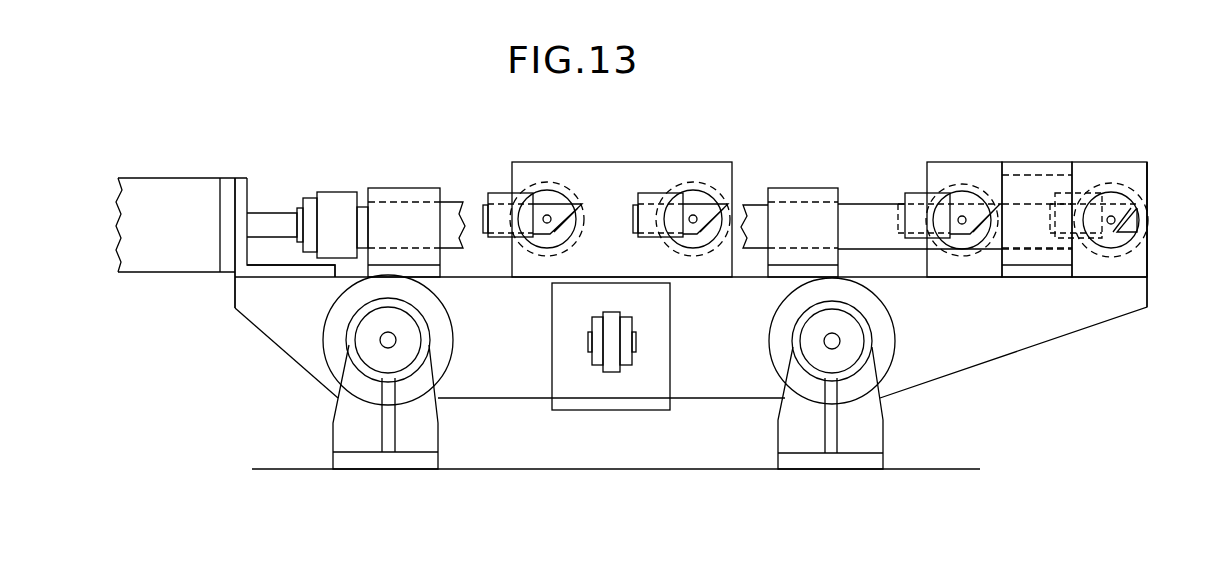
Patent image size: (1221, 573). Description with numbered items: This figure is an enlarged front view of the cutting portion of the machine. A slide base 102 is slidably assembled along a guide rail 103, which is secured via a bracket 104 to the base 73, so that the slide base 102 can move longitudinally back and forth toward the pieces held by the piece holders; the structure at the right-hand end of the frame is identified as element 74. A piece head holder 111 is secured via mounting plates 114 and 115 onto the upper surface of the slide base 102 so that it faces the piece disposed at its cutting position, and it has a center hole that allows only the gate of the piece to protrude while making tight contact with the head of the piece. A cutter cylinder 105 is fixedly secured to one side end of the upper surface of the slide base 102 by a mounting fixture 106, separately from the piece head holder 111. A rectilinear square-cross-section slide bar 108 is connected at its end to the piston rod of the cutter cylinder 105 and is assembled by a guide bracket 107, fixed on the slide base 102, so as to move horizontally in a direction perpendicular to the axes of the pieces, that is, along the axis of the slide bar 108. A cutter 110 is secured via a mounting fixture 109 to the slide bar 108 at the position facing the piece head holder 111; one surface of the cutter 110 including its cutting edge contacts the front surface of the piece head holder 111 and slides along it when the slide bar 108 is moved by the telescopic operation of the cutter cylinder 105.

The base 73 is at (303, 480).
The frame end column 74 is at (1153, 297).
The slide base 102 is at (1020, 345).
The guide rail 103 is at (386, 342).
The bracket 104 is at (810, 444).
The cutter cylinder 105 is at (178, 189).
The mounting fixture 106 is at (260, 272).
The guide bracket 107 is at (397, 188).
The slide bar 108 is at (860, 204).
The mounting fixture 109 is at (490, 193).
The cutter 110 is at (550, 207).
The piece head holder 111 is at (568, 182).
The mounting plate 114 is at (621, 168).
The mounting plate 115 is at (1040, 170).